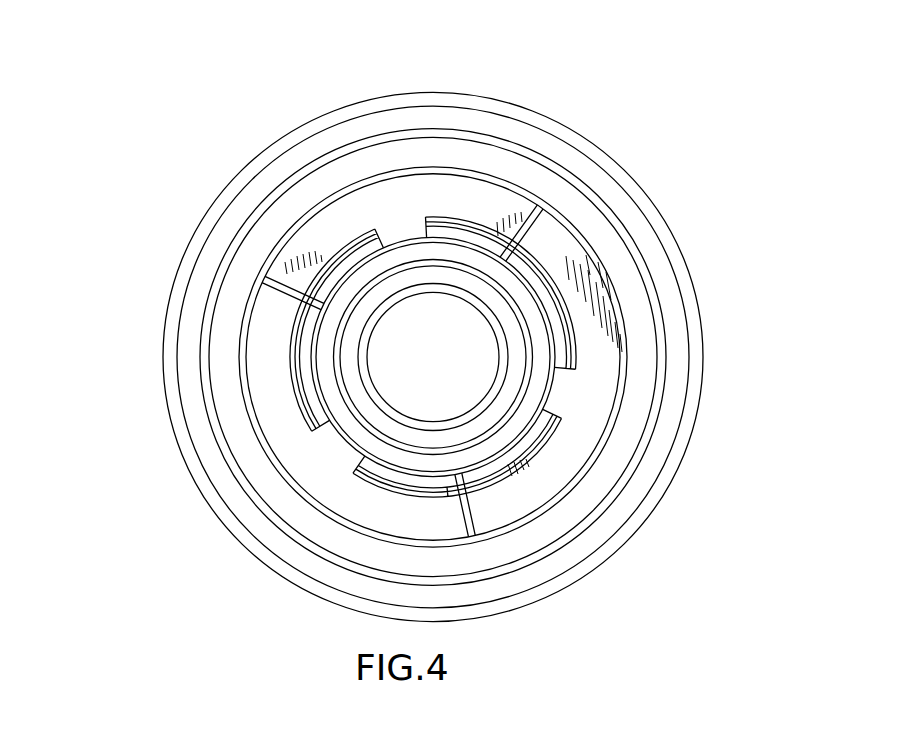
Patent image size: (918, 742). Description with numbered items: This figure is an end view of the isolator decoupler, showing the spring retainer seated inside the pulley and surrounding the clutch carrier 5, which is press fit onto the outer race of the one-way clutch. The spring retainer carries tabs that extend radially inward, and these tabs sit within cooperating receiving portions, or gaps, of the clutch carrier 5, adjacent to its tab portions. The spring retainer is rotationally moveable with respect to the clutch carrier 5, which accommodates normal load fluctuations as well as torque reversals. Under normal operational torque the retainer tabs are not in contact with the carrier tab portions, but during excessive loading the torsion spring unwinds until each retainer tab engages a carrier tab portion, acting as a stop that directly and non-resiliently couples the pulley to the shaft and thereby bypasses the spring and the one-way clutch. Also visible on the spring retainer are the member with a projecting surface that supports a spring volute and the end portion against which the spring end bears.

The clutch carrier 5 is at (108, 456).